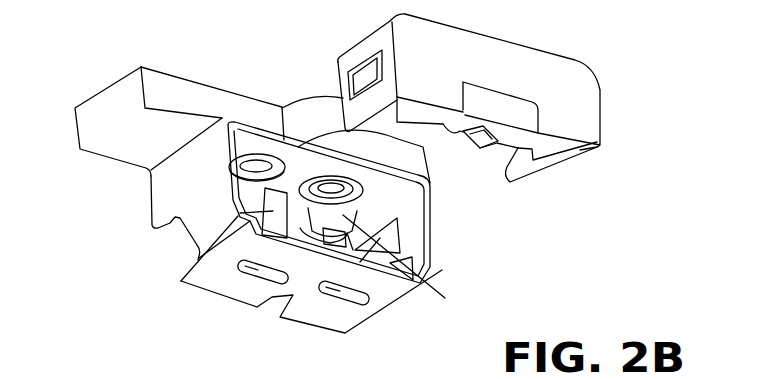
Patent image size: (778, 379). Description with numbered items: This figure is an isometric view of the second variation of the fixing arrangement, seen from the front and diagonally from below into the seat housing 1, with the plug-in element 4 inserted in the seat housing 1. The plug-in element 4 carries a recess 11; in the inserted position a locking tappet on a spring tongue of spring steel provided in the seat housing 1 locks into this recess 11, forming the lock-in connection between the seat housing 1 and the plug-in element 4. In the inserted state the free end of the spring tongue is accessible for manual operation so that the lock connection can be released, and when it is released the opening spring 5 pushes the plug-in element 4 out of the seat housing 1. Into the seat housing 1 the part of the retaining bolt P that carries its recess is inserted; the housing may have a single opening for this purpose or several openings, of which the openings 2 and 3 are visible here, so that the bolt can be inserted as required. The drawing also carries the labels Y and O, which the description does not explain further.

The connector block Y is at (88, 122).
The seat housing 1 is at (164, 202).
The opening 2 is at (303, 183).
The opening 3 is at (250, 160).
The plug-in element 4 is at (638, 22).
The opening spring 5 is at (185, 275).
The recess 11 is at (482, 140).
The opening O is at (387, 207).
The retaining bolt P is at (430, 262).